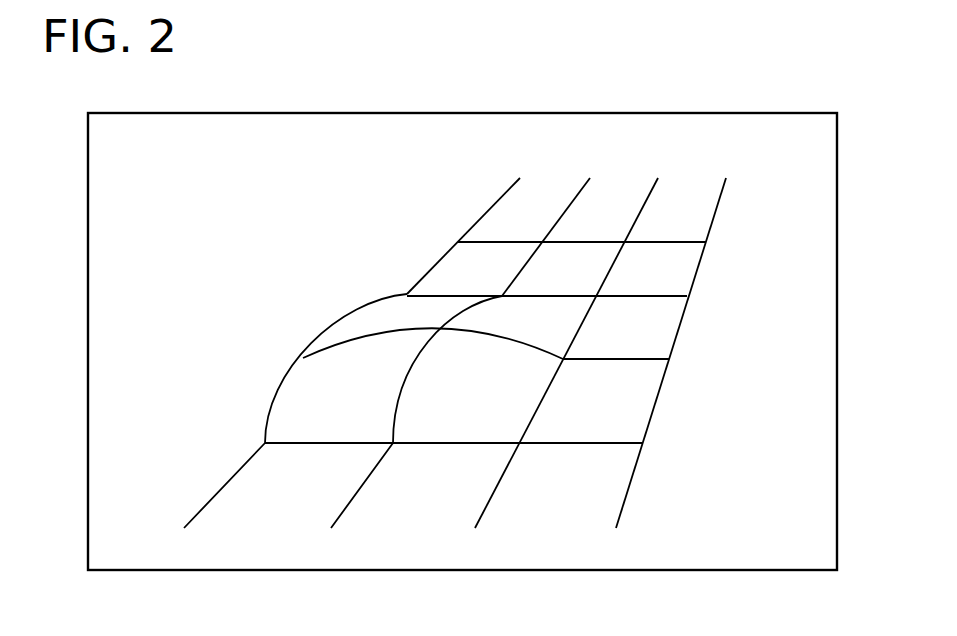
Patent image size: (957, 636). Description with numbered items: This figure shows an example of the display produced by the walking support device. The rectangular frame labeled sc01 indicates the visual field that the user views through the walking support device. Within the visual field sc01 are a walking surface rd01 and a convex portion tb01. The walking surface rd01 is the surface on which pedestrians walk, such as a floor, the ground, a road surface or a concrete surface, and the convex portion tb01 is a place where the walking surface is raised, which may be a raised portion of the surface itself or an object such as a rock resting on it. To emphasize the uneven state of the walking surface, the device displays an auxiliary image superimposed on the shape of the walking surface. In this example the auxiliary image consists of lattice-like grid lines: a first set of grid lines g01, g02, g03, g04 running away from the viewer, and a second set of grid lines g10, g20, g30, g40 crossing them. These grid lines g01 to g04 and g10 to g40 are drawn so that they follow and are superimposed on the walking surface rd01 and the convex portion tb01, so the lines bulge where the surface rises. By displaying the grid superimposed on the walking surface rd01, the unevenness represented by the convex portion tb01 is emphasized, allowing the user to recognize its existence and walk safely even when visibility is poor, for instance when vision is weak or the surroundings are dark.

The visual field sc01 is at (718, 112).
The grid line g01 is at (470, 222).
The grid line g02 is at (553, 223).
The grid line g03 is at (574, 339).
The grid line g04 is at (678, 339).
The grid line g10 is at (475, 445).
The grid line g20 is at (637, 362).
The grid line g30 is at (569, 297).
The grid line g40 is at (603, 244).
The walking surface rd01 is at (253, 485).
The convex portion tb01 is at (502, 397).